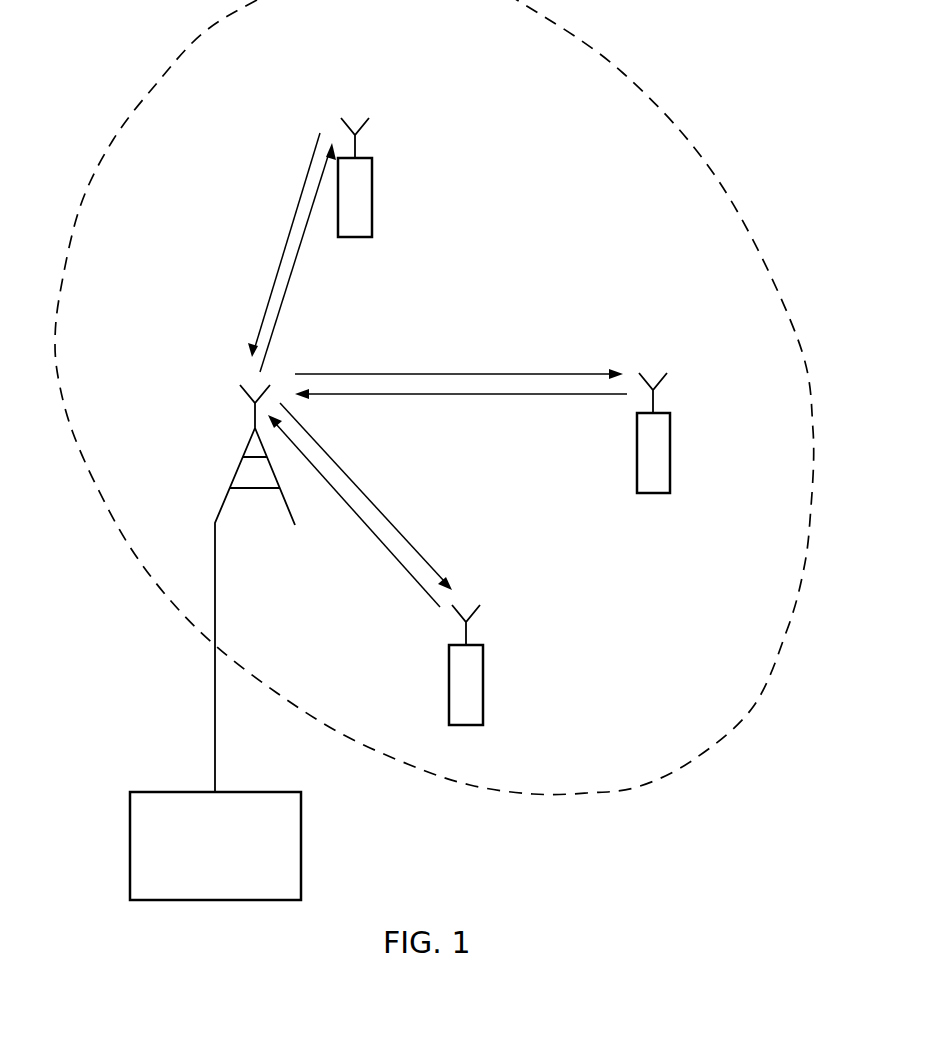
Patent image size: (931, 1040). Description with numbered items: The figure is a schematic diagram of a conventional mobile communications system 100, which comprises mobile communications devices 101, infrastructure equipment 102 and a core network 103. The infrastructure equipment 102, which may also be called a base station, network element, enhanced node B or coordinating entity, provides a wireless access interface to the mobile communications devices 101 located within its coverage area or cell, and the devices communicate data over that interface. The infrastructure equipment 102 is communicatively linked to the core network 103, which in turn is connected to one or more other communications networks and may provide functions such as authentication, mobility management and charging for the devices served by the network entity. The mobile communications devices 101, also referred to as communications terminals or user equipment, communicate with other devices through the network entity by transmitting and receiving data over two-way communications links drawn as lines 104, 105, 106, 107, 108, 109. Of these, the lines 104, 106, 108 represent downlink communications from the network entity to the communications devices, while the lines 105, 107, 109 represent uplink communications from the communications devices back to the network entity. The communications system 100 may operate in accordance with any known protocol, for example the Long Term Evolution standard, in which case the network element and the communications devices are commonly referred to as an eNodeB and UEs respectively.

The mobile communications system 100 is at (448, 59).
The mobile communications devices 101 is at (372, 200).
The infrastructure equipment 102 is at (233, 475).
The core network 103 is at (302, 847).
The downlink communications link 104 is at (272, 328).
The uplink communications link 105 is at (292, 225).
The downlink communications link 106 is at (465, 372).
The uplink communications link 107 is at (433, 397).
The downlink communications link 108 is at (363, 500).
The uplink communications link 109 is at (417, 582).